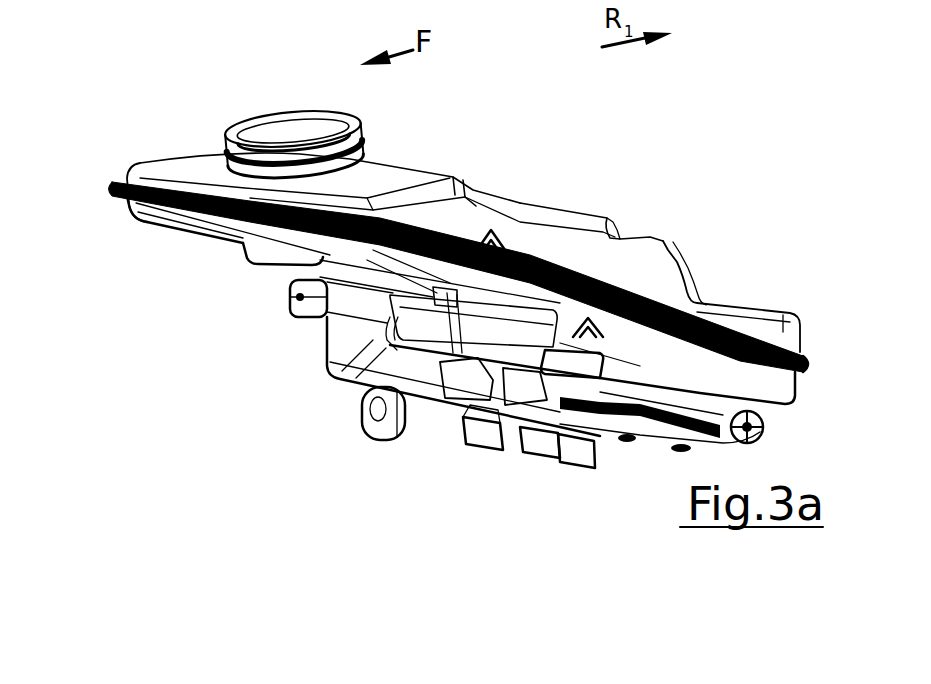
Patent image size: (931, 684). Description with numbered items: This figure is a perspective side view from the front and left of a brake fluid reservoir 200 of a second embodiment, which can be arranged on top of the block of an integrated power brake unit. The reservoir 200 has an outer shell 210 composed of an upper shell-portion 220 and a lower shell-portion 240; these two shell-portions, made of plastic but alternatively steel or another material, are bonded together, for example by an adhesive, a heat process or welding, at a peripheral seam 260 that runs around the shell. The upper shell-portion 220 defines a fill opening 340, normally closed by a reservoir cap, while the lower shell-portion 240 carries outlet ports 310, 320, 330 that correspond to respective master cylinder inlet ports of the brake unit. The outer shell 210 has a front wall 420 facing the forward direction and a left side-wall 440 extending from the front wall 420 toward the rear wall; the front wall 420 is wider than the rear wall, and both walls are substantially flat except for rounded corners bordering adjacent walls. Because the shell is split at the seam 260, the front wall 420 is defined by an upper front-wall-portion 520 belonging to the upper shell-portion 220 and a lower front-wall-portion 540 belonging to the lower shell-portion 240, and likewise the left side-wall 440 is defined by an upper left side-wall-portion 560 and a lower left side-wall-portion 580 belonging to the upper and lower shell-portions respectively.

The brake fluid reservoir 200 is at (614, 161).
The outer shell 210 is at (658, 232).
The upper shell-portion 220 is at (476, 206).
The lower shell-portion 240 is at (320, 350).
The peripheral seam 260 is at (807, 365).
The outlet port 310 is at (462, 450).
The outlet port 320 is at (525, 458).
The outlet port 330 is at (573, 462).
The fill opening 340 is at (300, 112).
The front wall 420 is at (127, 210).
The left side-wall 440 is at (675, 292).
The upper front-wall-portion 520 is at (133, 163).
The lower front-wall-portion 540 is at (167, 217).
The upper left side-wall-portion 560 is at (627, 277).
The lower left side-wall-portion 580 is at (712, 383).